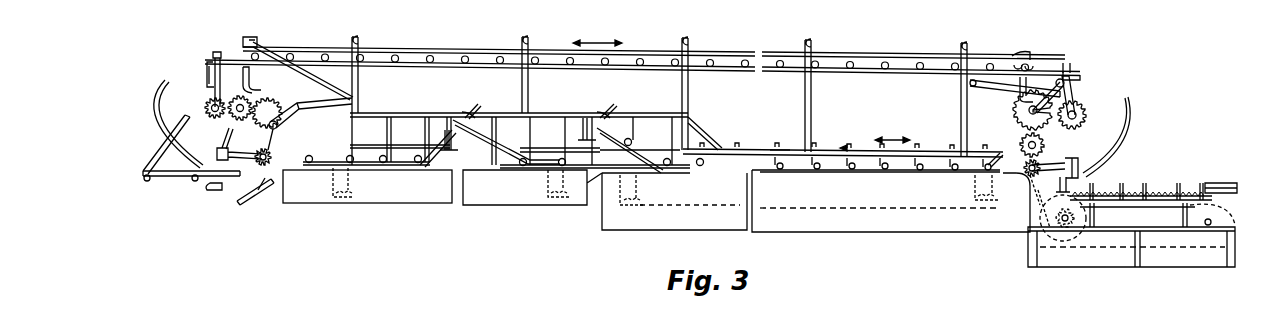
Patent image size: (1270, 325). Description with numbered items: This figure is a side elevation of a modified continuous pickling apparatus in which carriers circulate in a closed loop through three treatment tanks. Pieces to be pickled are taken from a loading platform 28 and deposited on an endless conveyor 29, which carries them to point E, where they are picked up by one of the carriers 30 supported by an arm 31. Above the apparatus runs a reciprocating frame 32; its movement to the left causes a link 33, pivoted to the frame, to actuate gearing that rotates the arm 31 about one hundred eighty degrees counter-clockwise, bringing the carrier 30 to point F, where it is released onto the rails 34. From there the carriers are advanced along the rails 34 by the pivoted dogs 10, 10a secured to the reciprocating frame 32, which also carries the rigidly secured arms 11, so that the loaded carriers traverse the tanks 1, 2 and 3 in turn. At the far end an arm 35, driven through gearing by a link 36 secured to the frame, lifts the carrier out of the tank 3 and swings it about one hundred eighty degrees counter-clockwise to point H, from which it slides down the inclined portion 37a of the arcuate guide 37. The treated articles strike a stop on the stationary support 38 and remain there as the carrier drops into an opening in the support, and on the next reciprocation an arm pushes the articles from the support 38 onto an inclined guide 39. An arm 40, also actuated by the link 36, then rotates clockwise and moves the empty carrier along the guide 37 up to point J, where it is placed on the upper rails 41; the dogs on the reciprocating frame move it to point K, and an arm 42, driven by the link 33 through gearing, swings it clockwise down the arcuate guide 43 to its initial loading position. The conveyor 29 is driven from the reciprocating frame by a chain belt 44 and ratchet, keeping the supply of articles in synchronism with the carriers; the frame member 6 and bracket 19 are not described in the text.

The tank 1 is at (891, 201).
The tank 2 is at (532, 187).
The tank 3 is at (367, 186).
The frame 6 is at (512, 140).
The dog 10 is at (792, 139).
The dog 10a is at (466, 118).
The arm 11 is at (446, 137).
The bracket 19 is at (1020, 56).
The loading platform 28 is at (1229, 182).
The endless conveyor 29 is at (1183, 182).
The carrier 30 is at (1070, 186).
The arm 31 is at (1063, 161).
The reciprocating frame 32 is at (865, 53).
The link 33 is at (988, 89).
The rails 34 is at (862, 167).
The arm 35 is at (240, 196).
The link 36 is at (300, 104).
The arcuate guide 37 is at (155, 121).
The inclined portion 37a is at (218, 152).
The stationary support 38 is at (183, 180).
The inclined guide 39 is at (262, 195).
The arm 40 is at (221, 98).
The rails 41 is at (420, 67).
The arm 42 is at (1066, 86).
The arcuate guide 43 is at (1131, 106).
The chain belt 44 is at (1043, 195).
The point E is at (1152, 203).
The point F is at (1001, 163).
The point H is at (244, 146).
The point J is at (232, 78).
The point K is at (1076, 58).